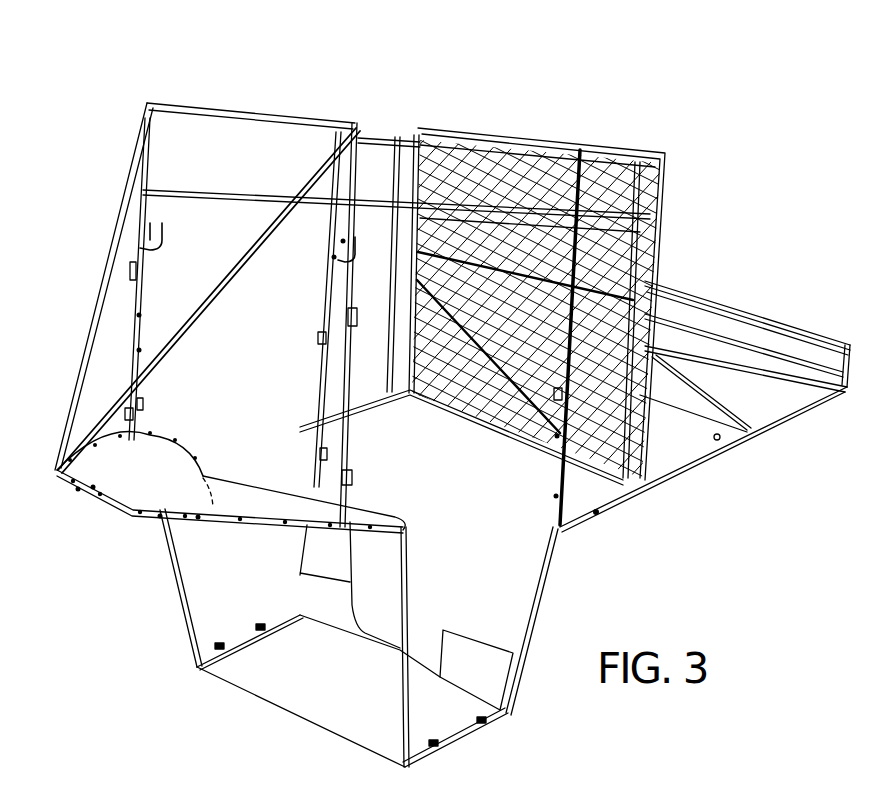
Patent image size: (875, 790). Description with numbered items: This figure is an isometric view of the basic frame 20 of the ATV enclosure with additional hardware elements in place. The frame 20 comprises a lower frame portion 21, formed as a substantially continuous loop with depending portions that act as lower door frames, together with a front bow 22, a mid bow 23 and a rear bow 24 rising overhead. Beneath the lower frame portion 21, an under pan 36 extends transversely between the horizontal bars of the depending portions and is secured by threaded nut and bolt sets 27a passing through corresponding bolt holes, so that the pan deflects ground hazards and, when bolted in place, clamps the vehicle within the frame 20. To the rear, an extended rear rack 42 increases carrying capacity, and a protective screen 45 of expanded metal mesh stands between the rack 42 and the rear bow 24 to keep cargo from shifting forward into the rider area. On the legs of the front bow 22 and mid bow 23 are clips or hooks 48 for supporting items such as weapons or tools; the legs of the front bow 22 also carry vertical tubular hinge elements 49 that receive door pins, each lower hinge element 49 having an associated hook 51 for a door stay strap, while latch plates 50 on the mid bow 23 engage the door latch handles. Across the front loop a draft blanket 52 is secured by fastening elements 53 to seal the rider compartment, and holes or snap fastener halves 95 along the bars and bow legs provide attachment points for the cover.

The frame 20 is at (525, 100).
The lower frame portion 21 is at (555, 616).
The front bow 22 is at (245, 100).
The mid bow 23 is at (405, 126).
The rear bow 24 is at (652, 213).
The threaded nut and bolt sets 27a is at (260, 628).
The under pan 36 is at (272, 700).
The extended rear rack 42 is at (750, 296).
The protective screen 45 is at (680, 161).
The clips or hooks 48 is at (164, 241).
The hinge elements 49 is at (123, 280).
The latch plates 50 is at (317, 341).
The hook 51 is at (142, 404).
The draft blanket 52 is at (187, 467).
The fastening elements 53 is at (287, 521).
The holes or snap fastener halves 95 is at (333, 258).